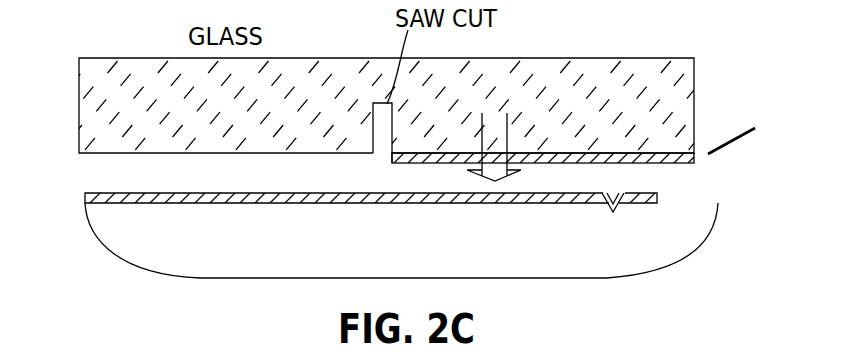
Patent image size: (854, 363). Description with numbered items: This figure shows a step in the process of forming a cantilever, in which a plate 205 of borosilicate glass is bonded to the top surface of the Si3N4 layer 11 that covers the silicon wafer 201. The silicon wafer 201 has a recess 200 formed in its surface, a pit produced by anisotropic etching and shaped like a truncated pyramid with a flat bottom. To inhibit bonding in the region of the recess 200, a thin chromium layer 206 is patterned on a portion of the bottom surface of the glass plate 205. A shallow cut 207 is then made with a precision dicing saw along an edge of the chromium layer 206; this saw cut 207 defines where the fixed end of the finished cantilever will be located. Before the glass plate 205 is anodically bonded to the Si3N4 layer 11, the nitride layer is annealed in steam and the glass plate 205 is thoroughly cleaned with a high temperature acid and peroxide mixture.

The plate of borosilicate glass 205 is at (648, 58).
The shallow cut 207 is at (383, 104).
The chromium layer 206 is at (694, 162).
The Si3N4 layer 11 is at (85, 197).
The silicon wafer 201 is at (172, 270).
The recess 200 is at (602, 210).